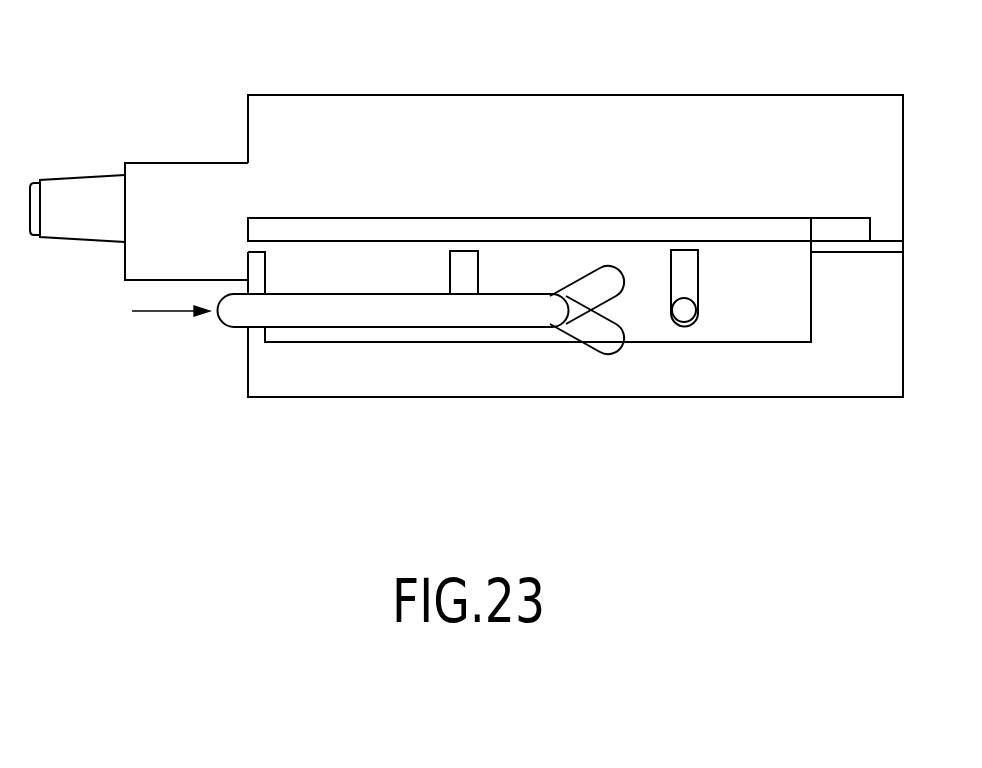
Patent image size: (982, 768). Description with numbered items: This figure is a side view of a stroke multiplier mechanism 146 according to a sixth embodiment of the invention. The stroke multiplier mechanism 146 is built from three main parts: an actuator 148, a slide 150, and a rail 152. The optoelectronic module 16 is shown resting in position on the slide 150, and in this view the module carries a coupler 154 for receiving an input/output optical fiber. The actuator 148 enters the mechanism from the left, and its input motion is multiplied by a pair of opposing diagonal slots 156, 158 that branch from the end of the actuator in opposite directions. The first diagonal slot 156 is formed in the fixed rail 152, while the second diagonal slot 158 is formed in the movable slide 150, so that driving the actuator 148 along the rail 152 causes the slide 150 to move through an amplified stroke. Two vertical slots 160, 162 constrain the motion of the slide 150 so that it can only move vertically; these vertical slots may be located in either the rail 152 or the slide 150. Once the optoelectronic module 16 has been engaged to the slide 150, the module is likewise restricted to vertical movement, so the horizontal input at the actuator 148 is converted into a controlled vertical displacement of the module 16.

The optoelectronic module 16 is at (285, 103).
The coupler 154 is at (78, 187).
The actuator 148 is at (230, 313).
The stroke multiplier mechanism 146 is at (308, 482).
The slide 150 is at (768, 328).
The rail 152 is at (860, 385).
The vertical slot 160 is at (450, 270).
The second diagonal slot 158 is at (618, 277).
The first diagonal slot 156 is at (590, 357).
The vertical slot 162 is at (692, 280).